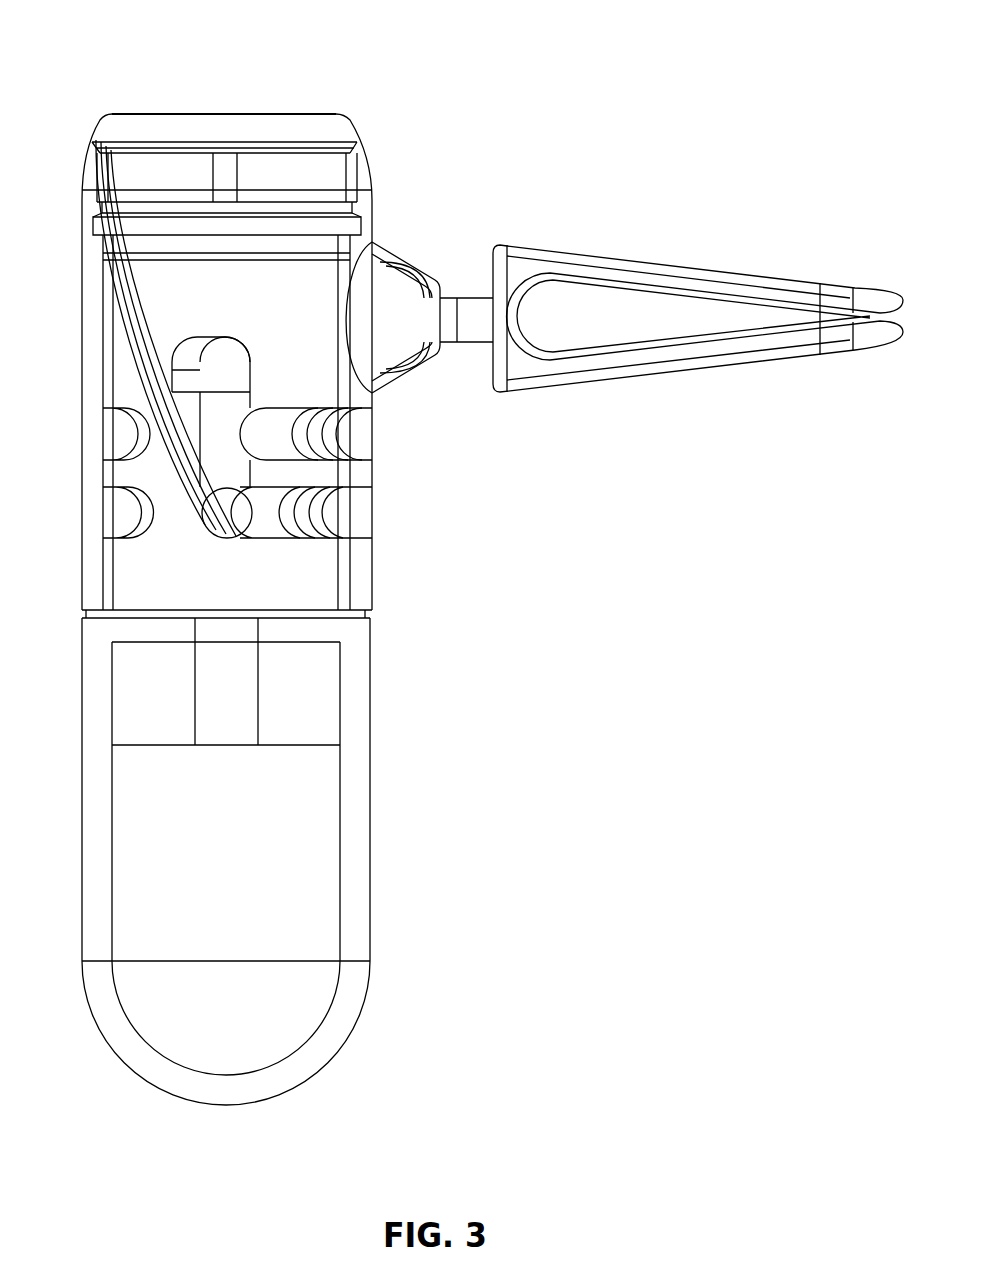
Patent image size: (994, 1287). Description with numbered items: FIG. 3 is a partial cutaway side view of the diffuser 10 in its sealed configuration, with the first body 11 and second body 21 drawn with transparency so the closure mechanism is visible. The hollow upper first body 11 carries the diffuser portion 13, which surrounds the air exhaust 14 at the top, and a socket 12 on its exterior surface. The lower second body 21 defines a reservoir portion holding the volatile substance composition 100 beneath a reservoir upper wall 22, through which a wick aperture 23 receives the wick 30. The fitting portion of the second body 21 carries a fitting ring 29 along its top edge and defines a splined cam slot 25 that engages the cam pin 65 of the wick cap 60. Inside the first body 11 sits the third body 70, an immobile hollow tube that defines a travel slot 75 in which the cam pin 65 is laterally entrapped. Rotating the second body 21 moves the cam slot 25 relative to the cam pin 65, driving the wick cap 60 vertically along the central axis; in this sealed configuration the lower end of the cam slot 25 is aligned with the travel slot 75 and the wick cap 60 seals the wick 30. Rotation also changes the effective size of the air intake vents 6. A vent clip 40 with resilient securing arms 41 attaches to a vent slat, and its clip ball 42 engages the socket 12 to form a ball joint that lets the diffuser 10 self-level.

The diffuser 10 is at (150, 70).
The first body 11 is at (372, 583).
The socket 12 is at (398, 258).
The diffuser portion 13 is at (328, 125).
The air exhaust 14 is at (222, 96).
The second body 21 is at (335, 1035).
The reservoir upper wall 22 is at (137, 630).
The wick aperture 23 is at (193, 655).
The cam slot 25 is at (143, 487).
The fitting ring 29 is at (140, 227).
The wick 30 is at (240, 703).
The vent clip 40 is at (755, 180).
The securing arms 41 is at (773, 355).
The clip ball 42 is at (440, 298).
The wick cap 60 is at (217, 437).
The cam pin 65 is at (217, 537).
The third body 70 is at (163, 285).
The travel slot 75 is at (177, 360).
The volatile substance composition 100 is at (300, 870).
The air intake vents 6 is at (385, 517).